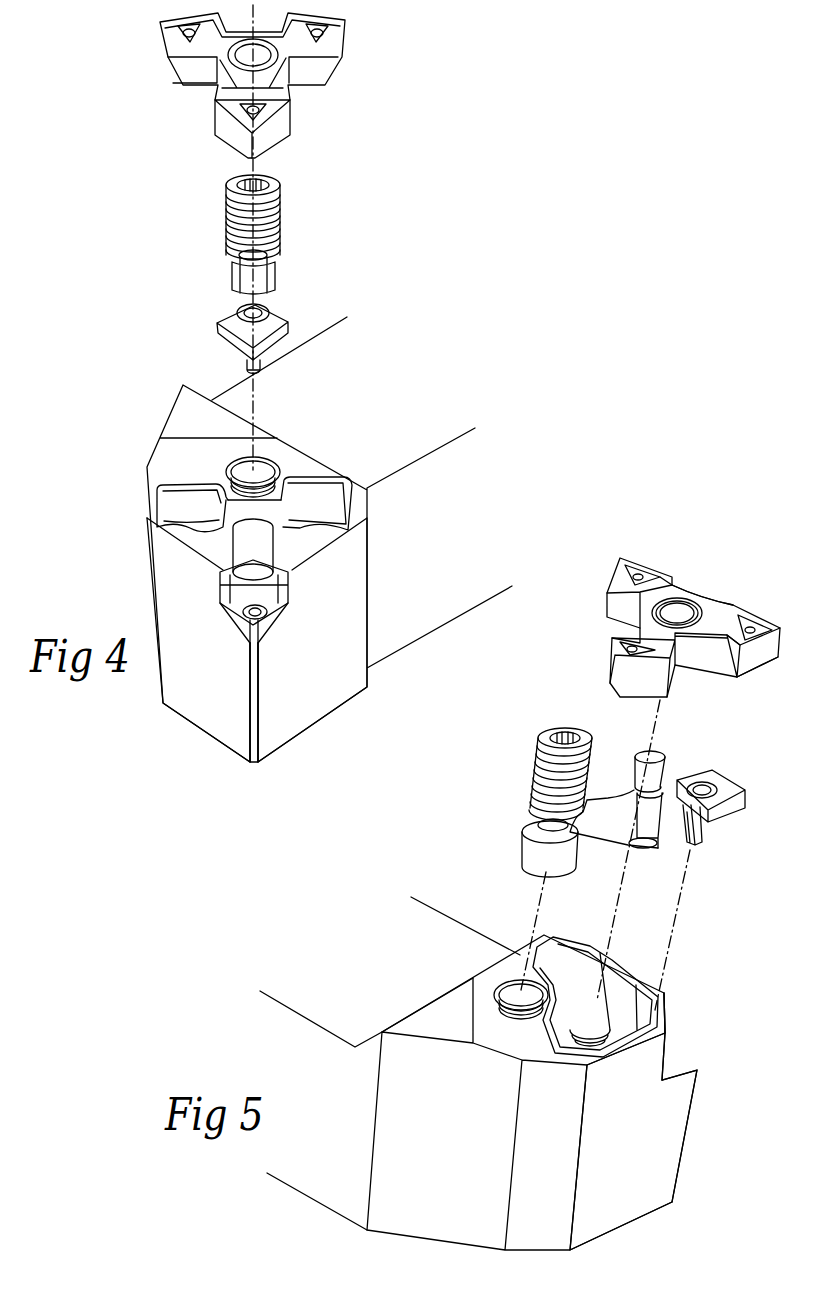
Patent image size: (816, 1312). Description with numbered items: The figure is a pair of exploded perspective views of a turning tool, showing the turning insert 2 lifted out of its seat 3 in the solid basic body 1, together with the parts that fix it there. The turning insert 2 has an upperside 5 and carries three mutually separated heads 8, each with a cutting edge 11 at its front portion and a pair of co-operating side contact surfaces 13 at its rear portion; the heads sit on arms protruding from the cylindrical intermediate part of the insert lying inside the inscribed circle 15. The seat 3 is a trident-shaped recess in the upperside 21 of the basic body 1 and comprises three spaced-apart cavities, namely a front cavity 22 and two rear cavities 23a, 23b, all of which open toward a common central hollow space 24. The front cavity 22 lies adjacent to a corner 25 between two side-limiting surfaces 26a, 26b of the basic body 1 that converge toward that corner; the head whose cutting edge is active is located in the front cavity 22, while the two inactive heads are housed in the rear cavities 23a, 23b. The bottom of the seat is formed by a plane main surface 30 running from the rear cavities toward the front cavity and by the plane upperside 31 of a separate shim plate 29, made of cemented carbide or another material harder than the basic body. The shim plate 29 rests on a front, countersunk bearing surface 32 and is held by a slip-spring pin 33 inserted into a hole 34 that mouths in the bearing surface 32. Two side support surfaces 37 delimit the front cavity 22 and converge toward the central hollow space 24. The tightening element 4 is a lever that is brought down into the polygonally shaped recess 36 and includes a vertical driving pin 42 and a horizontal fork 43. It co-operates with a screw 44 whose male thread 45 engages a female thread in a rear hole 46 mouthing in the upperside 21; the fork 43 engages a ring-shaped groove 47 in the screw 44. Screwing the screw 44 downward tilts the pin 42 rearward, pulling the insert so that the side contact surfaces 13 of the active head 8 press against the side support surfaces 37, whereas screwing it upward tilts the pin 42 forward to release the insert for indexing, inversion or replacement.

In FIG. 5, the basic body 1 is at (502, 1071).
In FIG. 4, the turning insert 2 is at (348, 66).
In FIG. 5, the turning insert 2 is at (677, 585).
In FIG. 4, the seat 3 is at (291, 539).
In FIG. 5, the seat 3 is at (564, 1068).
In FIG. 5, the tightening element 4 is at (649, 816).
In FIG. 5, the upperside 5 is at (715, 613).
In FIG. 5, the heads 8 is at (667, 560).
In FIG. 5, the cutting edge 11 is at (617, 573).
In FIG. 5, the side contact surfaces 13 is at (720, 677).
In FIG. 5, the inscribed circle 15 is at (680, 598).
In FIG. 5, the upperside 21 is at (425, 1030).
In FIG. 5, the front cavity 22 is at (680, 1034).
In FIG. 4, the rear cavity 23a is at (180, 525).
In FIG. 4, the rear cavity 23b is at (313, 483).
In FIG. 4, the central hollow space 24 is at (283, 537).
In FIG. 4, the corner 25 is at (255, 713).
In FIG. 4, the side-limiting surface 26a is at (316, 642).
In FIG. 4, the side-limiting surface 26b is at (166, 652).
In FIG. 5, the side-limiting surface 26b is at (650, 1158).
In FIG. 5, the shim plate 29 is at (733, 810).
In FIG. 5, the main surface 30 is at (561, 1018).
In FIG. 5, the upperside 31 is at (728, 778).
In FIG. 4, the bearing surface 32 is at (263, 627).
In FIG. 5, the bearing surface 32 is at (690, 1062).
In FIG. 5, the slip-spring pin 33 is at (700, 833).
In FIG. 4, the hole 34 is at (250, 616).
In FIG. 5, the polygonally shaped recess 36 is at (589, 1038).
In FIG. 4, the side support surfaces 37 is at (220, 588).
In FIG. 5, the side support surfaces 37 is at (662, 1010).
In FIG. 5, the driving pin 42 is at (652, 757).
In FIG. 5, the fork 43 is at (603, 835).
In FIG. 4, the screw 44 is at (290, 222).
In FIG. 5, the screw 44 is at (514, 793).
In FIG. 5, the male thread 45 is at (545, 780).
In FIG. 4, the rear hole 46 is at (270, 465).
In FIG. 5, the rear hole 46 is at (515, 981).
In FIG. 5, the ring-shaped groove 47 is at (525, 826).